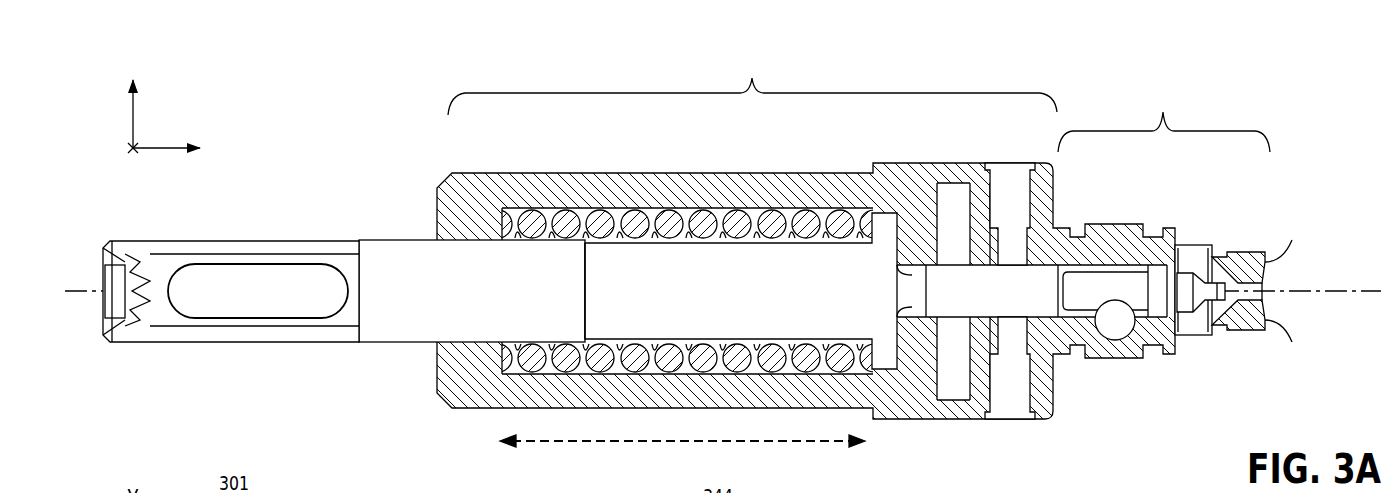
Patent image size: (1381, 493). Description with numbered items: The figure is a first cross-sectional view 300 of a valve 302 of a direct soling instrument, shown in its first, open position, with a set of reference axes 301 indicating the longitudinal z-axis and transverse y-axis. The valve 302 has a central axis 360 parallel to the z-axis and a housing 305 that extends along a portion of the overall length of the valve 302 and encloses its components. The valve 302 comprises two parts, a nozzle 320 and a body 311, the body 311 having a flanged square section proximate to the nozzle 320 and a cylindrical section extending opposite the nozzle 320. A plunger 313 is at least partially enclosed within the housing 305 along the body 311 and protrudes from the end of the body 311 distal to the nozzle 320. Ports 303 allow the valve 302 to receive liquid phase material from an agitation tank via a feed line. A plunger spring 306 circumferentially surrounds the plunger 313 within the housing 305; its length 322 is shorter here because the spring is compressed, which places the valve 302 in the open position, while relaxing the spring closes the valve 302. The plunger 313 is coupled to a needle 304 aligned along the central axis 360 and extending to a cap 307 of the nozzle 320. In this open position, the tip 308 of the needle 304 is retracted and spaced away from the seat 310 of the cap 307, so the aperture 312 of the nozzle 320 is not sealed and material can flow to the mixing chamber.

The first cross-sectional view 300 is at (1305, 115).
The reference axes 301 is at (180, 112).
The valve 302 is at (940, 70).
The ports 303 is at (1010, 183).
The needle 304 is at (1047, 300).
The housing 305 is at (545, 180).
The plunger spring 306 is at (703, 216).
The cap 307 is at (1230, 257).
The tip 308 is at (1217, 300).
The seat 310 is at (1292, 342).
The body 311 is at (752, 82).
The aperture 312 is at (1262, 290).
The plunger 313 is at (778, 276).
The nozzle 320 is at (1164, 118).
The length 322 is at (665, 445).
The central axis 360 is at (492, 288).